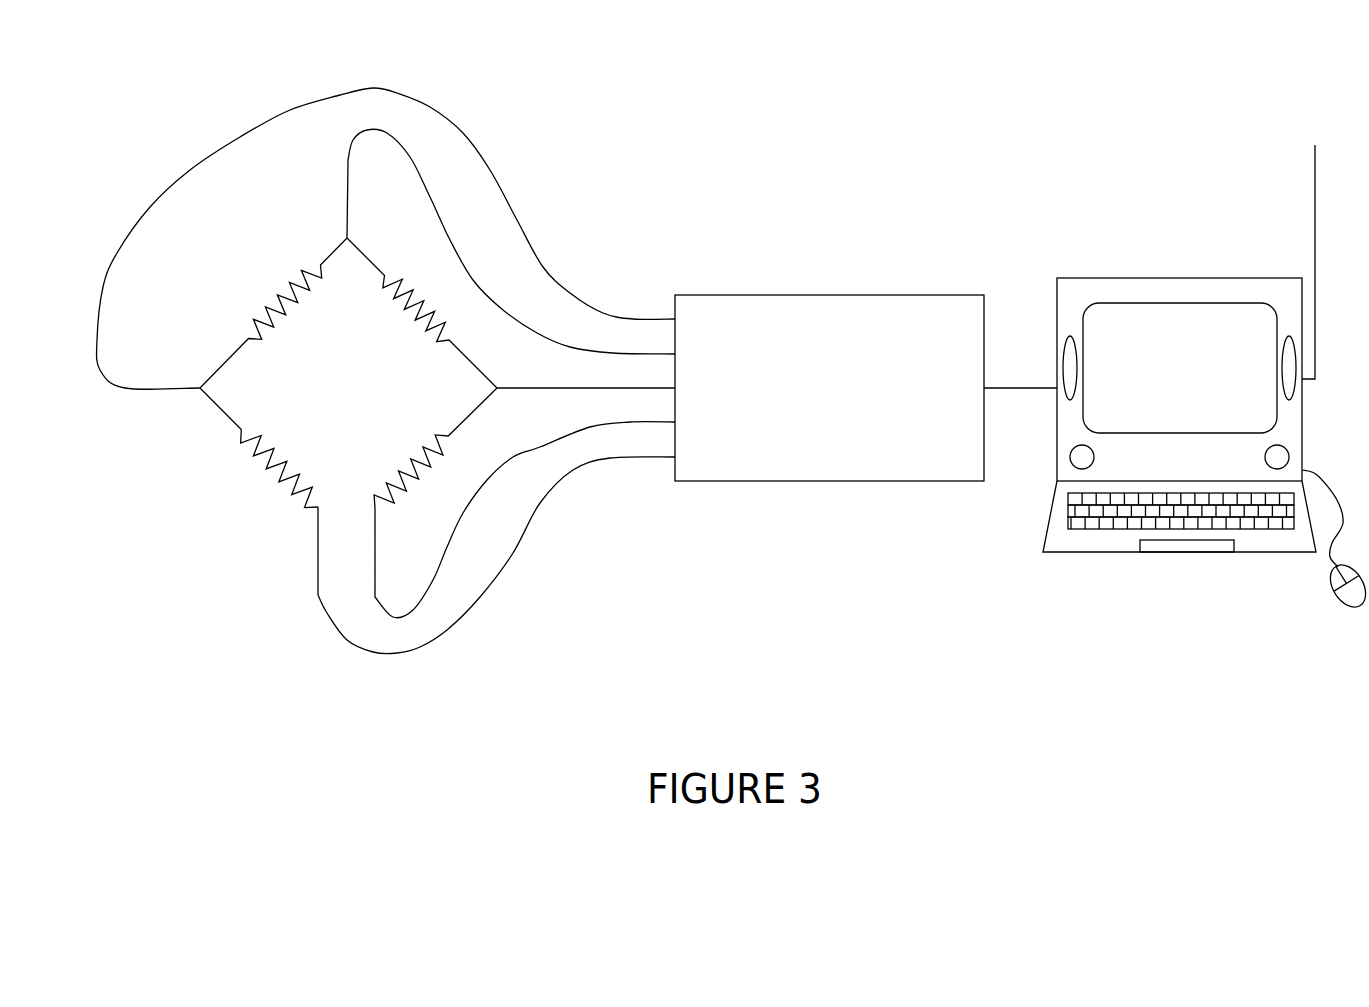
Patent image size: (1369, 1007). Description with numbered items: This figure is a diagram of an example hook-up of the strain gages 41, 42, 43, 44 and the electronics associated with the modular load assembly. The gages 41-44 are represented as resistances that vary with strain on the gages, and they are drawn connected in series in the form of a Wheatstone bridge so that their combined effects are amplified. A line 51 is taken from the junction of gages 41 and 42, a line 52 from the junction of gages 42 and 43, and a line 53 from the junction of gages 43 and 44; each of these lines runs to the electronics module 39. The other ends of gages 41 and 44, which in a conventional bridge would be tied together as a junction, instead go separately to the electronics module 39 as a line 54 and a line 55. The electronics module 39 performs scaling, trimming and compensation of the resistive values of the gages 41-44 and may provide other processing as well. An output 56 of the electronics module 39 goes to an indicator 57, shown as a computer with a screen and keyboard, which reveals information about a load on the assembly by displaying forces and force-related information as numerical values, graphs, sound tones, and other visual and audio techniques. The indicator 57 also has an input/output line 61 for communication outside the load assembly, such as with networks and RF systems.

The electronics module 39 is at (829, 295).
The gage 41 is at (268, 476).
The gage 42 is at (268, 298).
The gage 43 is at (455, 322).
The gage 44 is at (455, 448).
The line 51 is at (203, 172).
The line 52 is at (430, 197).
The line 53 is at (535, 388).
The line 54 is at (445, 555).
The line 55 is at (483, 598).
The output 56 is at (1004, 388).
The indicator 57 is at (1178, 278).
The input/output line 61 is at (1315, 183).